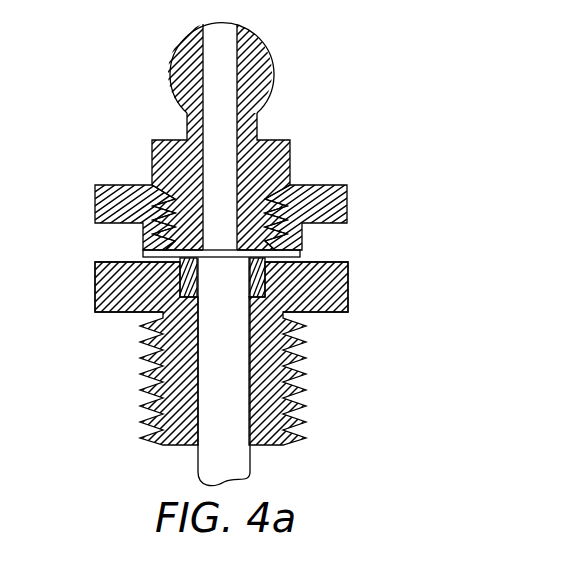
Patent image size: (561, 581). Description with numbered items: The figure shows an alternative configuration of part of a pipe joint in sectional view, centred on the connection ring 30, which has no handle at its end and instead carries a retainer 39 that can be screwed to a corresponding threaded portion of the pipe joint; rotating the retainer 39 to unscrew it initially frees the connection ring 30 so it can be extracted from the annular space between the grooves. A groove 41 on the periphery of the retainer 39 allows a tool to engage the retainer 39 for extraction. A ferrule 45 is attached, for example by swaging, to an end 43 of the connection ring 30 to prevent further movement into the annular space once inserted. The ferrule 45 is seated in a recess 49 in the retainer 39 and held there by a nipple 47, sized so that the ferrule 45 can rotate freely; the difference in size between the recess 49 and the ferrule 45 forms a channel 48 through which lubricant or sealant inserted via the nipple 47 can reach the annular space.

The connection ring 30 is at (251, 460).
The retainer 39 is at (363, 170).
The groove 41 is at (330, 238).
The end 43 is at (258, 303).
The ferrule 45 is at (160, 305).
The nipple 47 is at (169, 75).
The channel 48 is at (223, 291).
The recess 49 is at (160, 268).